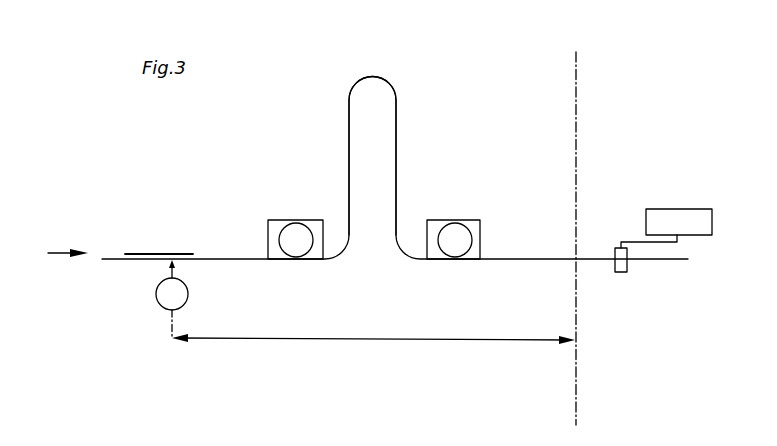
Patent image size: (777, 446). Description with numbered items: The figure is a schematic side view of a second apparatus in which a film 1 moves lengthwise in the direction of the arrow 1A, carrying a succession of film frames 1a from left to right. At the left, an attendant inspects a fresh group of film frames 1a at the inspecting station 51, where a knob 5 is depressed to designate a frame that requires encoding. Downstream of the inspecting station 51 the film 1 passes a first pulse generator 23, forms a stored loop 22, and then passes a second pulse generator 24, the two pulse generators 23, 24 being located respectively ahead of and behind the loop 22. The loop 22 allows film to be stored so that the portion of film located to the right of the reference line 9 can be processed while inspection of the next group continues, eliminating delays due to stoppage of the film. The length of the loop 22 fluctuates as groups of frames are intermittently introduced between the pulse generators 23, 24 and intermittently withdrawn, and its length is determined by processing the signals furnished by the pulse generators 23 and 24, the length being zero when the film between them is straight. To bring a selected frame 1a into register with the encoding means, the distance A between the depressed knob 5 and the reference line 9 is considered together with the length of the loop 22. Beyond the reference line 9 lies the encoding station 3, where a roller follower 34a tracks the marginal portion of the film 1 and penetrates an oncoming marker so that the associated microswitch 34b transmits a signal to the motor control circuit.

The film 1 is at (226, 262).
The direction arrow 1A is at (57, 254).
The film frames 1a is at (180, 254).
The knob 5 is at (158, 305).
The inspecting station 51 is at (186, 380).
The distance A is at (373, 330).
The loop 22 is at (367, 74).
The pulse generator 23 is at (275, 227).
The pulse generator 24 is at (476, 225).
The reference line 9 is at (578, 398).
The roller follower 34a is at (620, 272).
The microswitch 34b is at (686, 213).
The encoding station 3 is at (680, 302).